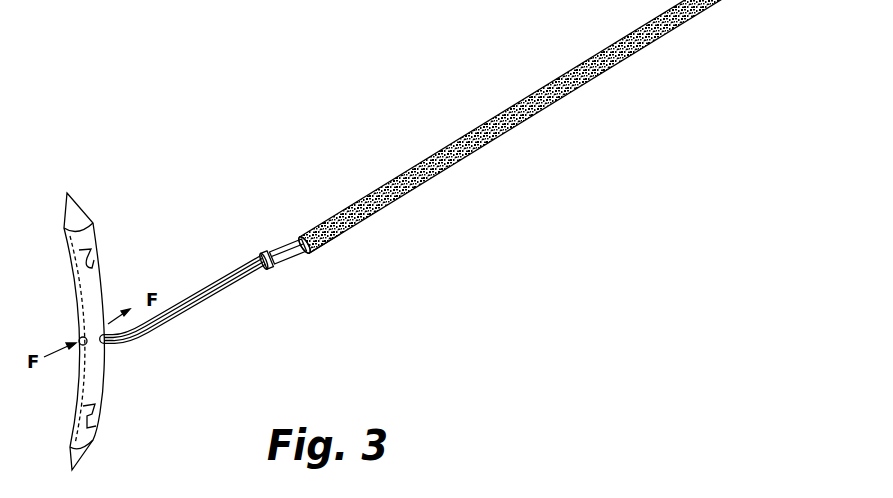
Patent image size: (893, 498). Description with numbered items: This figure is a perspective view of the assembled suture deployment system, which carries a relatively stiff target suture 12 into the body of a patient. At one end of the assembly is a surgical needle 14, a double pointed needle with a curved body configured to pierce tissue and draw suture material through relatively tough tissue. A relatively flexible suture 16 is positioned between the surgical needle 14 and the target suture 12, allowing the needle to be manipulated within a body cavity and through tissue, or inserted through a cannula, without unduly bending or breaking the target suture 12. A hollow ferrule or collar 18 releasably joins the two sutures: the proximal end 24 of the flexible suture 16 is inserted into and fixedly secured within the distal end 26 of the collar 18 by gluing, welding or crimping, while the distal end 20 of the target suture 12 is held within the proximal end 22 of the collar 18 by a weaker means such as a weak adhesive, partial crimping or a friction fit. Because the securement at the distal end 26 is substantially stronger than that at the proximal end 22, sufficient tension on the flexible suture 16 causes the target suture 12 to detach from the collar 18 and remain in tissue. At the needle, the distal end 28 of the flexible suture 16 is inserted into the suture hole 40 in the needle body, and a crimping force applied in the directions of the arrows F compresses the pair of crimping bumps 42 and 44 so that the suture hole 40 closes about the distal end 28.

The target suture 12 is at (475, 129).
The surgical needle 14 is at (77, 315).
The flexible suture 16 is at (200, 291).
The collar 18 is at (288, 265).
The distal end of target suture 20 is at (313, 250).
The proximal end of collar 22 is at (294, 238).
The proximal end of flexible suture 24 is at (262, 276).
The distal end of collar 26 is at (262, 252).
The distal end of flexible suture 28 is at (118, 350).
The suture hole 40 is at (112, 328).
The crimping bump 42 is at (79, 348).
The crimping bump 44 is at (109, 322).